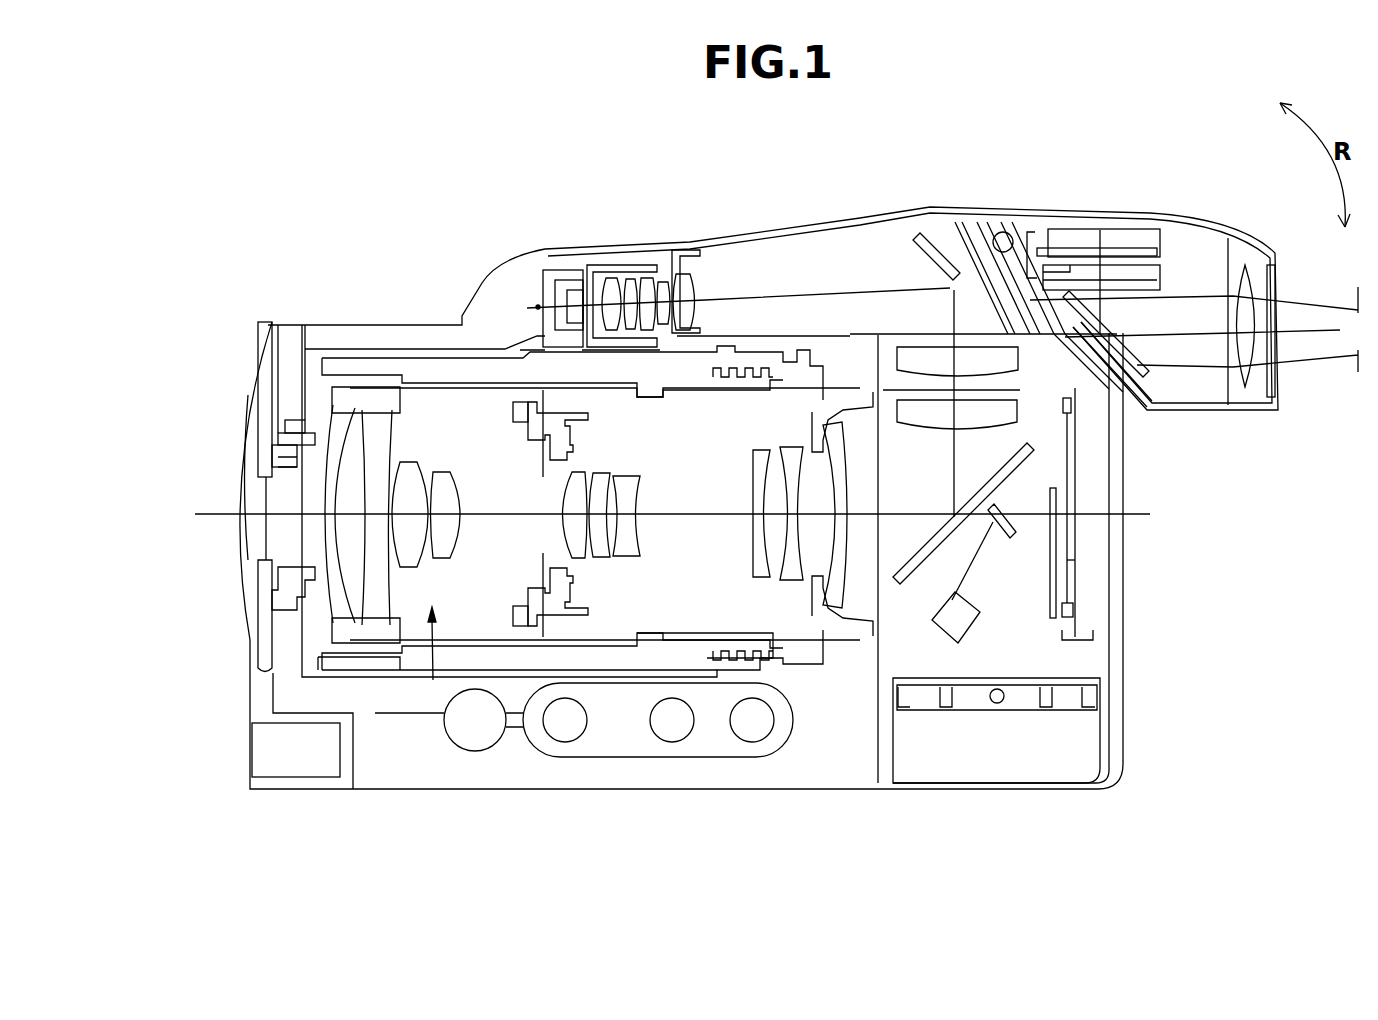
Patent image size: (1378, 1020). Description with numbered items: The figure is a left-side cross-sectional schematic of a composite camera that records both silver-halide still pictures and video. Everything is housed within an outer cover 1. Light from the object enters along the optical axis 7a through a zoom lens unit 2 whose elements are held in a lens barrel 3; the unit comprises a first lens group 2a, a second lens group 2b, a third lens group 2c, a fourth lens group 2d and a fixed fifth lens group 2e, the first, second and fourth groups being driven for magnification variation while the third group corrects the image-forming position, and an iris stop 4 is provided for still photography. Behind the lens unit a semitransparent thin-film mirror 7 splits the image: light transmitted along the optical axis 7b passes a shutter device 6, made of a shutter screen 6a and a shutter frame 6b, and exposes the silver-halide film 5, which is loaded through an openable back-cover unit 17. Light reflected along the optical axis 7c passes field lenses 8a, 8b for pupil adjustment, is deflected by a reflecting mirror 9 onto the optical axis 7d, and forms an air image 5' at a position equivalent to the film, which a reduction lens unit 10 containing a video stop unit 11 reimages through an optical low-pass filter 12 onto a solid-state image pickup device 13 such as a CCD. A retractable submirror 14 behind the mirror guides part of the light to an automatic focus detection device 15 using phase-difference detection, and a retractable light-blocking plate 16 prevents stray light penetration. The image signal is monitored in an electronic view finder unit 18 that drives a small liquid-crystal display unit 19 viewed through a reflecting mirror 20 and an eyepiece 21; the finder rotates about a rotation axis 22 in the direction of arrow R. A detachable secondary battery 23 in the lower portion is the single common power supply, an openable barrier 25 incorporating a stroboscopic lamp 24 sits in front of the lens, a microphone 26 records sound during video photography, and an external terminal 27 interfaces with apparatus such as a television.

The outer cover 1 is at (757, 229).
The lens unit 2 is at (368, 637).
The first lens group 2a is at (350, 525).
The second lens group 2b is at (437, 563).
The third lens group 2c is at (610, 565).
The fourth lens group 2d is at (780, 593).
The fifth lens group 2e is at (850, 563).
The lens barrel 3 is at (682, 640).
The iris stop 4 is at (541, 458).
The silver-halide film 5 is at (1120, 512).
The air image 5' is at (975, 368).
The shutter device 6 is at (1080, 643).
The shutter screen 6a is at (1070, 572).
The shutter frame 6b is at (1073, 610).
The semitransparent thin-film mirror 7 is at (940, 533).
The optical axis of incident light 7a is at (867, 513).
The optical axis of transmitted light 7b is at (1025, 497).
The optical axis of reflected light 7c is at (953, 465).
The optical axis of reflected light 7d is at (817, 296).
The field lens 8a is at (1015, 415).
The field lens 8b is at (933, 357).
The reflecting mirror 9 is at (950, 277).
The reduction lens unit 10 is at (705, 262).
The video stop unit 11 is at (650, 262).
The optical low-pass filter 12 is at (578, 262).
The solid-state image pickup device 13 is at (528, 270).
The submirror 14 is at (990, 561).
The automatic focus detection device 15 is at (947, 633).
The light-blocking plate 16 is at (1053, 620).
The back-cover unit 17 is at (1120, 768).
The electronic view finder unit 18 is at (1200, 240).
The liquid-crystal display unit 19 is at (1112, 283).
The reflecting mirror 20 is at (1143, 373).
The eyepiece 21 is at (1250, 278).
The rotation axis 22 is at (1008, 235).
The secondary battery 23 is at (1013, 765).
The stroboscopic lamp 24 is at (262, 335).
The barrier 25 is at (243, 410).
The microphone 26 is at (310, 770).
The external terminal 27 is at (717, 737).